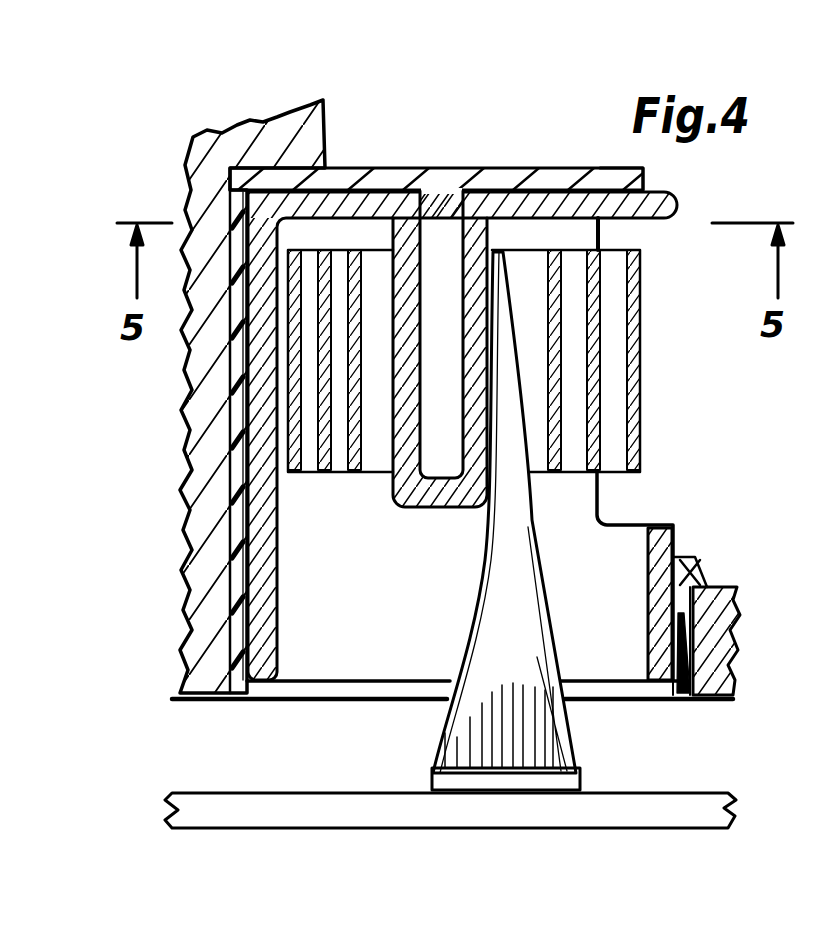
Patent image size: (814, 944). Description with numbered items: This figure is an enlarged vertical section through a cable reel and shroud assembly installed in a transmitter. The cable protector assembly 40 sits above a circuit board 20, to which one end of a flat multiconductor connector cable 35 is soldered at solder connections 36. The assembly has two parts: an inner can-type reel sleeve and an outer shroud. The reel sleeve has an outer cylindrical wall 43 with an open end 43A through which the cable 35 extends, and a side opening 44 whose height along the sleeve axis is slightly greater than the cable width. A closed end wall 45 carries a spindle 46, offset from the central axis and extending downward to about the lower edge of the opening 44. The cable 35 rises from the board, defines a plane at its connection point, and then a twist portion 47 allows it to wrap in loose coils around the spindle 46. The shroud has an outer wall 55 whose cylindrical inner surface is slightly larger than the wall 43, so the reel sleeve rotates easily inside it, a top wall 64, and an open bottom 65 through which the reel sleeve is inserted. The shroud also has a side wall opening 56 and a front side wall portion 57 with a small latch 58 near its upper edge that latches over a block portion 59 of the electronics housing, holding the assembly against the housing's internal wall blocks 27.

The circuit board 20 is at (587, 810).
The internal blocks 27 is at (277, 145).
The connector cable 35 is at (513, 608).
The solder connections 36 is at (588, 780).
The cable protector assembly 40 is at (400, 160).
The outer cylindrical wall 43 is at (273, 663).
The open end 43A is at (590, 664).
The opening 44 is at (650, 258).
The closed end wall 45 is at (553, 192).
The spindle 46 is at (390, 506).
The twist portion 47 is at (507, 435).
The outer wall 55 is at (222, 688).
The side wall opening 56 is at (683, 548).
The front side wall portion 57 is at (687, 663).
The latch 58 is at (700, 567).
The block portion 59 is at (717, 614).
The top wall 64 is at (609, 168).
The open bottom 65 is at (265, 688).